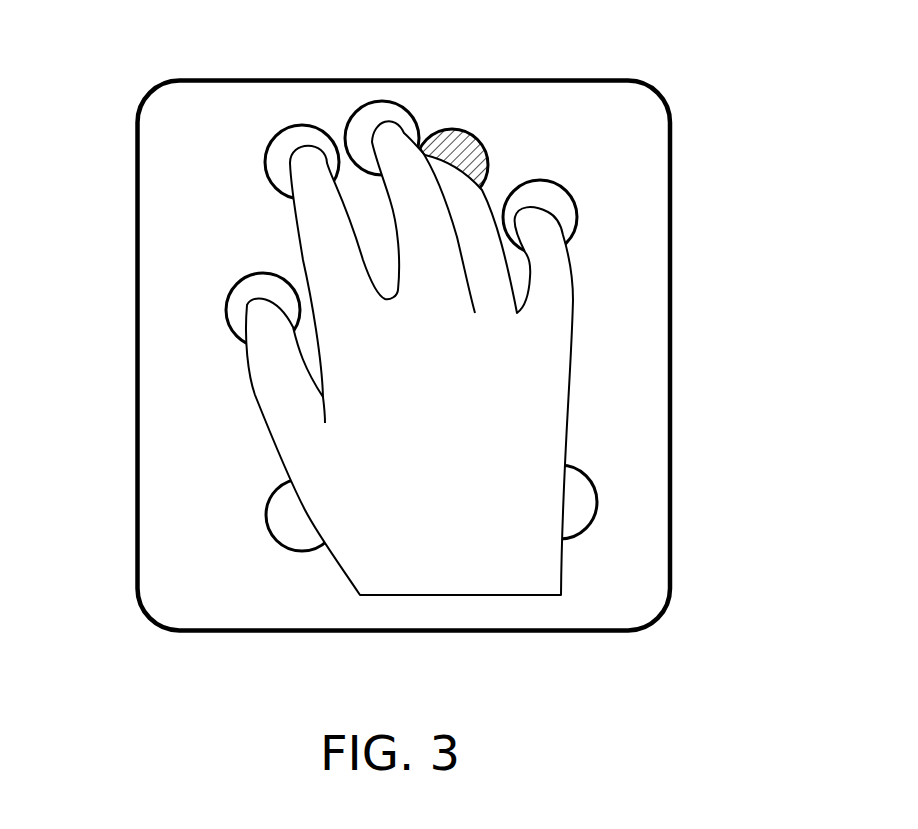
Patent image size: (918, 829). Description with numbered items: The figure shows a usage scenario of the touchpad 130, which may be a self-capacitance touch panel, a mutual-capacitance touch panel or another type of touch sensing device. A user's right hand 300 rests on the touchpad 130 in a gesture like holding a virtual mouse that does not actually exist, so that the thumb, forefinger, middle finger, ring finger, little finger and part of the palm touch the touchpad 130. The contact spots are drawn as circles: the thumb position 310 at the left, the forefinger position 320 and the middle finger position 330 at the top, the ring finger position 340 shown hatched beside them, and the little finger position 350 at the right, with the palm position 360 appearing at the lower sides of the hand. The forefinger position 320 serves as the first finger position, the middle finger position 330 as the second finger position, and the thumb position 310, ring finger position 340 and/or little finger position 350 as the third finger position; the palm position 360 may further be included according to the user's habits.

The touchpad 130 is at (670, 522).
The right hand 300 is at (562, 566).
The thumb position 310 is at (227, 310).
The forefinger position 320 is at (275, 136).
The middle finger position 330 is at (361, 106).
The ring finger position 340 is at (468, 131).
The little finger position 350 is at (538, 181).
The palm position 360 is at (267, 513).